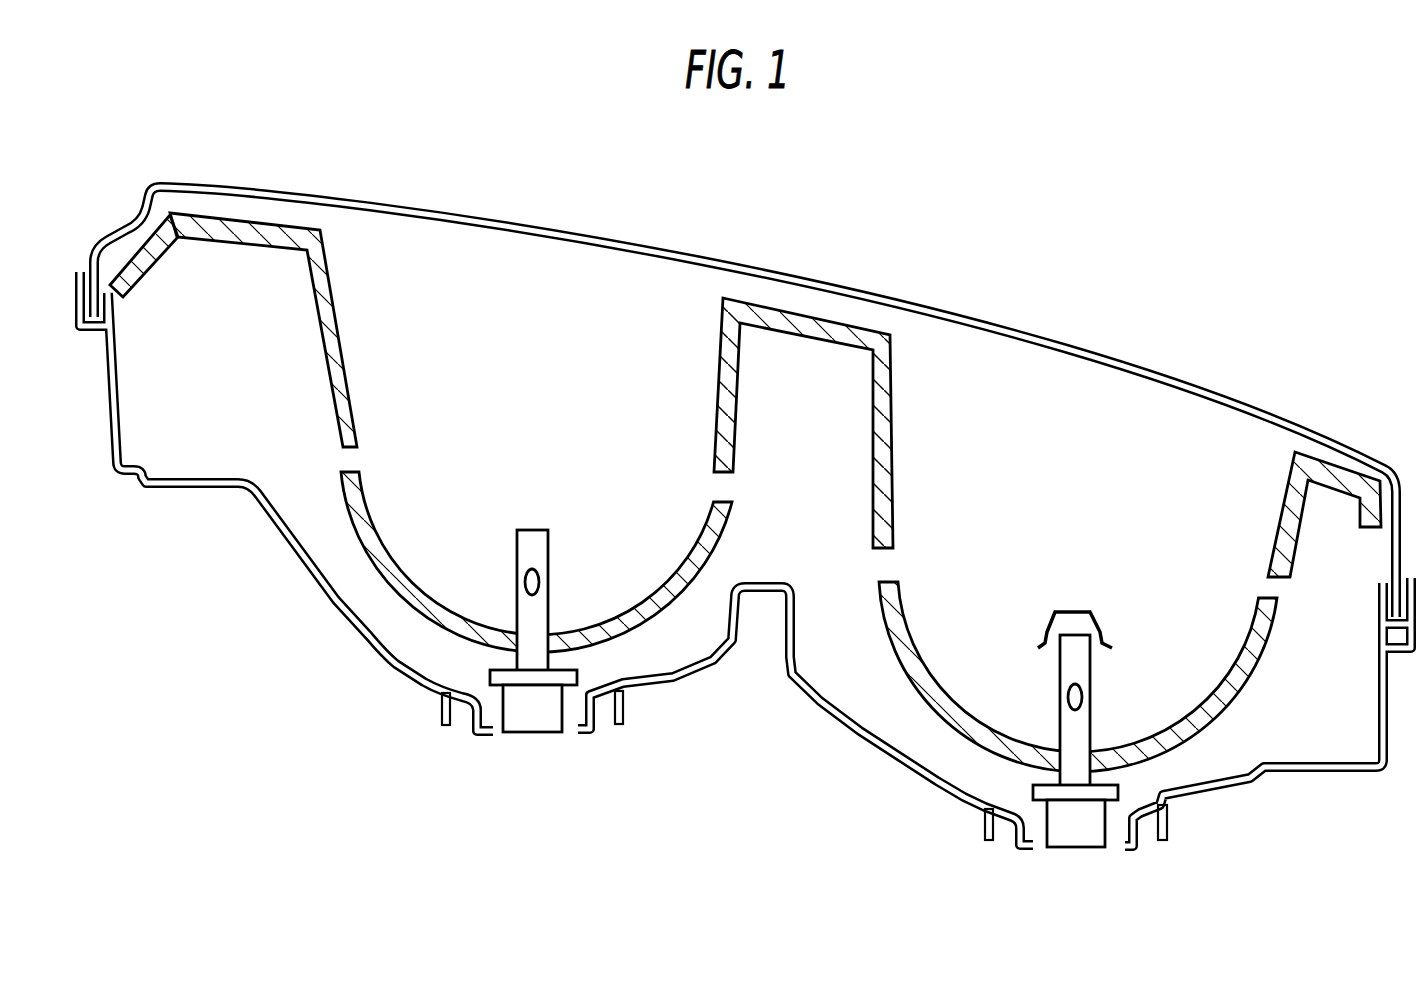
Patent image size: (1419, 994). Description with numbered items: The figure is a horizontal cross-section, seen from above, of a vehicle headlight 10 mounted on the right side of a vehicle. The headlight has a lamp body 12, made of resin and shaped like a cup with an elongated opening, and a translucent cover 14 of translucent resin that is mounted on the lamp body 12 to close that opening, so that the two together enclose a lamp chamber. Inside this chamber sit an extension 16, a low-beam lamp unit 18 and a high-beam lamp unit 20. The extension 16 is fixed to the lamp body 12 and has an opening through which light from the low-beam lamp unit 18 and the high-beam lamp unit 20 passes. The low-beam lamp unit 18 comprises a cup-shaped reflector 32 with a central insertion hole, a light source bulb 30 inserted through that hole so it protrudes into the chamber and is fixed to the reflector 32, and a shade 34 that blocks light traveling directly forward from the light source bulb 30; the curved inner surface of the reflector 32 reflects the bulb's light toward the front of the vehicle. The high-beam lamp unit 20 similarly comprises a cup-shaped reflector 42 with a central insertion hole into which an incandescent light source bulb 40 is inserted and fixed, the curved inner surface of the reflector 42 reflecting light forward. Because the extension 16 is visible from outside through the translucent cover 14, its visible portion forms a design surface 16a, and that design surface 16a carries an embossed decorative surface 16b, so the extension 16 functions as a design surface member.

The vehicle headlight 10 is at (1072, 227).
The lamp body 12 is at (1328, 773).
The translucent cover 14 is at (1342, 436).
The extension 16 is at (810, 300).
The design surface 16a is at (763, 302).
The decorative surface 16b is at (854, 322).
The low-beam lamp unit 18 is at (1128, 438).
The high-beam lamp unit 20 is at (580, 318).
The light source bulb 30 is at (1093, 693).
The reflector 32 is at (927, 652).
The shade 34 is at (1108, 623).
The light source bulb 40 is at (552, 578).
The reflector 42 is at (393, 548).